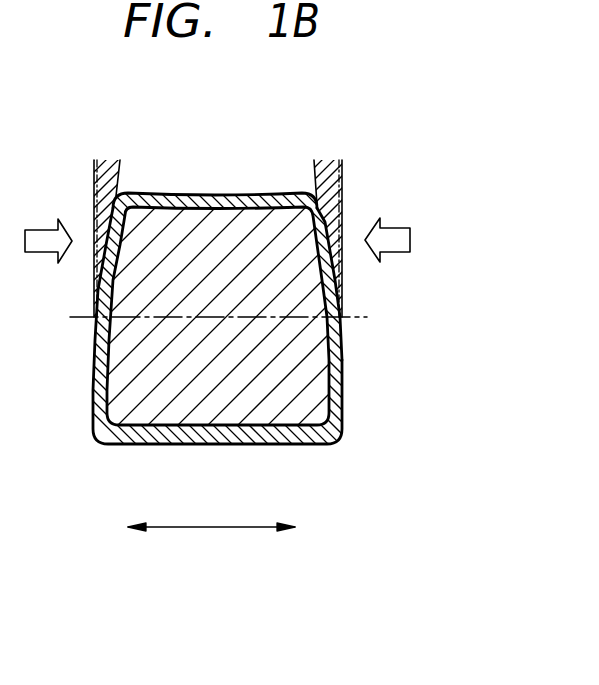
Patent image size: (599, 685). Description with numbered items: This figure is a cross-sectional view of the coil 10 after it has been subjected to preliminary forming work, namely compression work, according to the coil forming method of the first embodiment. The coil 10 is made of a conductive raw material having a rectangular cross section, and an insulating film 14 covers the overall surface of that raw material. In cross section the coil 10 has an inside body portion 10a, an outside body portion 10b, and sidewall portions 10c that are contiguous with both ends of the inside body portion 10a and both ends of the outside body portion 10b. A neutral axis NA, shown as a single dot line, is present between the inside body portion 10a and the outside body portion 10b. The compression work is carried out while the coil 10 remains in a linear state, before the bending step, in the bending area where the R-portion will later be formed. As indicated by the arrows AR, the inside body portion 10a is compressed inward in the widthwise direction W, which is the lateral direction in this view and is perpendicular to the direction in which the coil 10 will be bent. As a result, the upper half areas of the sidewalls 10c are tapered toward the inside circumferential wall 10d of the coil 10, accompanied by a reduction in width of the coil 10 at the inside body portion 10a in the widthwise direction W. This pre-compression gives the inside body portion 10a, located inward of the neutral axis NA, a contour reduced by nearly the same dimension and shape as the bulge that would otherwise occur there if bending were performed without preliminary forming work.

The coil 10 is at (352, 190).
The inside body portion 10a is at (158, 237).
The outside body portion 10b is at (297, 403).
The sidewall portions 10c is at (342, 338).
The inside circumferential wall 10d is at (265, 188).
The insulating film 14 is at (338, 382).
The arrows AR is at (392, 224).
The neutral axis NA is at (350, 316).
The widthwise direction W is at (258, 525).